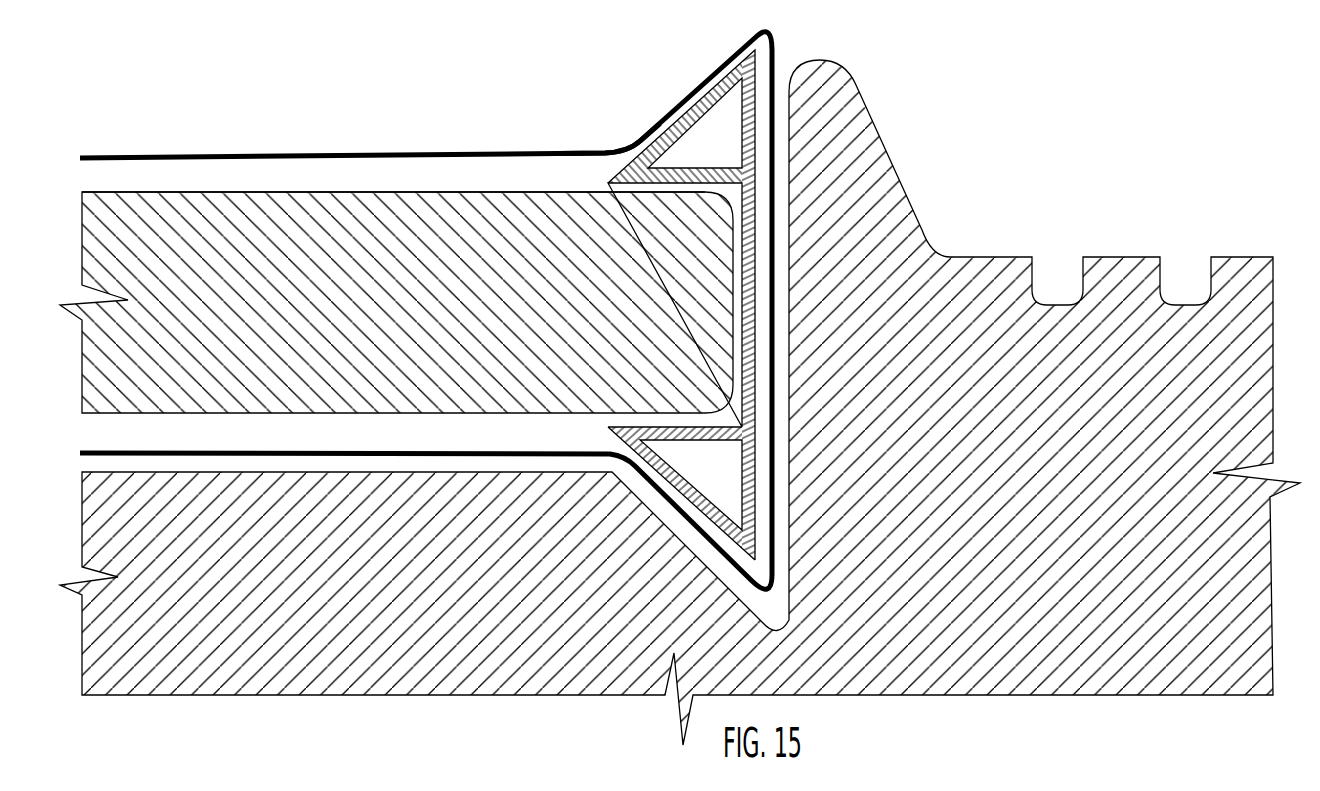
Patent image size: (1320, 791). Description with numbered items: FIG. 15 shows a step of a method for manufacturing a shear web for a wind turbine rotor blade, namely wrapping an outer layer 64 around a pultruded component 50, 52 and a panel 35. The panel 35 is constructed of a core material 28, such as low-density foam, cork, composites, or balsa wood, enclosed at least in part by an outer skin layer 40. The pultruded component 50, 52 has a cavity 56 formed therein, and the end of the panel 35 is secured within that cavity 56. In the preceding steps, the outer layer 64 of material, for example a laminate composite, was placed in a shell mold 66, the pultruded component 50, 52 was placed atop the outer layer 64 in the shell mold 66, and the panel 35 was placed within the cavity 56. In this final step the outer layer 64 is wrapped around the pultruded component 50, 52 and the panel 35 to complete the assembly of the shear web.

The core material 28 is at (367, 222).
The panel 35 is at (258, 183).
The outer skin layer 40 is at (178, 146).
The first pultruded component 50 is at (653, 305).
The pultruded component 52 is at (653, 305).
The cavity 56 is at (633, 418).
The outer layer 64 is at (564, 151).
The shell mold 66 is at (1115, 257).